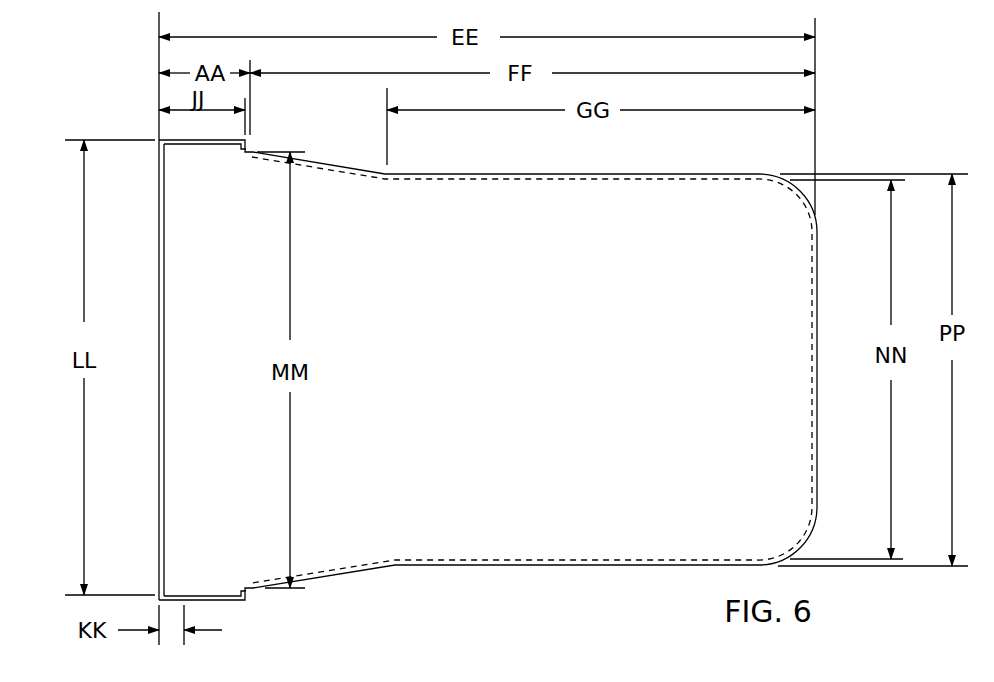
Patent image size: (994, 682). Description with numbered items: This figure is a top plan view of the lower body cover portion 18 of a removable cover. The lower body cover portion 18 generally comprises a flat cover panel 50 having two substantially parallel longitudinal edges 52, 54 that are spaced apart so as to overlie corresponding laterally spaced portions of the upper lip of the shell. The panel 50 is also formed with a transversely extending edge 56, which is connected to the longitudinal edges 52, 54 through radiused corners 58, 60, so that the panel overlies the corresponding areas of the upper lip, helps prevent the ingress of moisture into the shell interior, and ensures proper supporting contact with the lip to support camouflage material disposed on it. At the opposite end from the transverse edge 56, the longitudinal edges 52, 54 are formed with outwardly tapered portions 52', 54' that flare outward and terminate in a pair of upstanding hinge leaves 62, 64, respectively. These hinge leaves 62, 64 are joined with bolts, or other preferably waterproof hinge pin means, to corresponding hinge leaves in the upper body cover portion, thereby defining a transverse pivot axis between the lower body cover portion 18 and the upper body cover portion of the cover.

The lower body cover portion 18 is at (530, 572).
The flat cover panel 50 is at (636, 520).
The longitudinal edge 52 is at (577, 594).
The outwardly tapered portion 52' is at (324, 595).
The longitudinal edge 54 is at (572, 155).
The outwardly tapered portion 54' is at (319, 142).
The transversely extending edge 56 is at (815, 455).
The radiused corner 58 is at (795, 540).
The radiused corner 60 is at (800, 198).
The upstanding hinge leaf 62 is at (230, 600).
The upstanding hinge leaf 64 is at (180, 142).